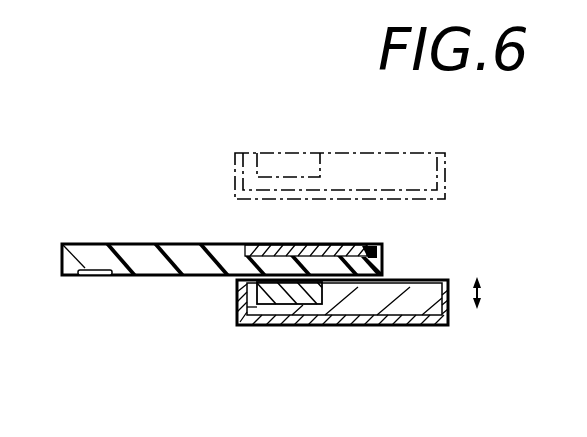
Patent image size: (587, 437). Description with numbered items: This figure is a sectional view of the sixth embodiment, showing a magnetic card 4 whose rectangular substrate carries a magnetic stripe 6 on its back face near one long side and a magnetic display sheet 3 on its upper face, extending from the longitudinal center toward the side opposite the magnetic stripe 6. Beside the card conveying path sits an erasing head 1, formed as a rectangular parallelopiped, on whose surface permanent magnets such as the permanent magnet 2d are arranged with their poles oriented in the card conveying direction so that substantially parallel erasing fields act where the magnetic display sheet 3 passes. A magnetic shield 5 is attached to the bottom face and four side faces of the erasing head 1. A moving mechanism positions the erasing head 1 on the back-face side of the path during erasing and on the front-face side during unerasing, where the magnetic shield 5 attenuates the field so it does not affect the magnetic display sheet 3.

The erasing head 1 is at (365, 303).
The permanent magnet 2d is at (287, 305).
The magnetic display sheet 3 is at (333, 244).
The magnetic card 4 is at (174, 254).
The magnetic shield 5 is at (435, 327).
The magnetic stripe 6 is at (93, 277).